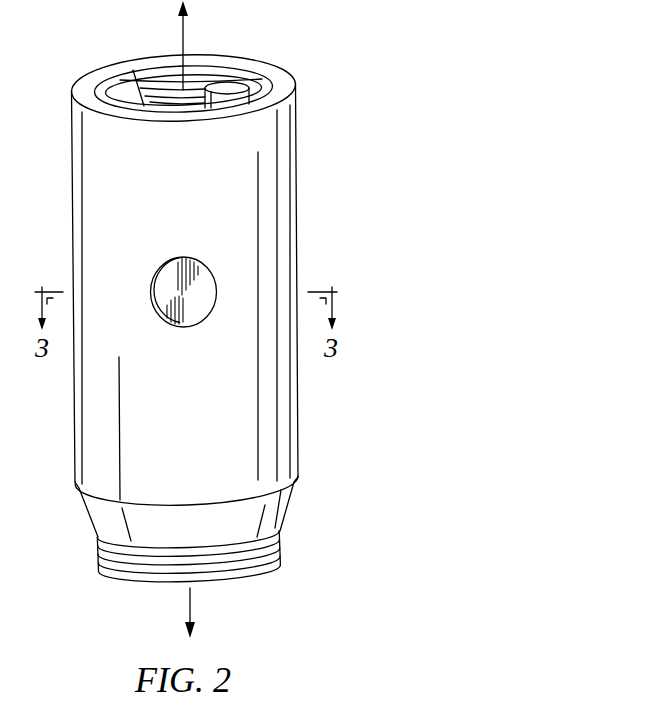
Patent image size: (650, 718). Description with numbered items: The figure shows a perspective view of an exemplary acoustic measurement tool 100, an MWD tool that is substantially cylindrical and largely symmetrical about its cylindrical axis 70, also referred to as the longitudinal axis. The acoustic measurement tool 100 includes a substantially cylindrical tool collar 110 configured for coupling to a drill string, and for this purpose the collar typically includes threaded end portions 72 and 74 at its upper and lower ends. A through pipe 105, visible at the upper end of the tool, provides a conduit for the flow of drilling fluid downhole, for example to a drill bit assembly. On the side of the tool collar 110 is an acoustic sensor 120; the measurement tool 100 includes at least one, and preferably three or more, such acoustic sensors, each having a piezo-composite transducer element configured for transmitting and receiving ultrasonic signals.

The acoustic measurement tool 100 is at (352, 177).
The tool collar 110 is at (298, 425).
The threaded end portion 72 is at (114, 81).
The cylindrical axis 70 is at (181, 34).
The through pipe 105 is at (228, 88).
The acoustic sensor 120 is at (163, 282).
The threaded end portion 74 is at (128, 575).